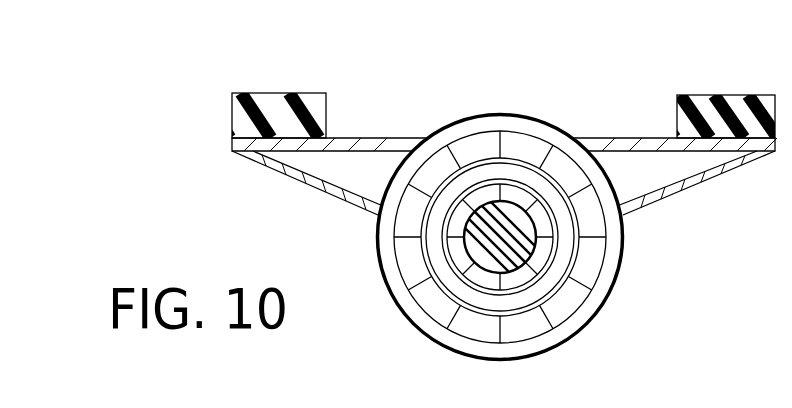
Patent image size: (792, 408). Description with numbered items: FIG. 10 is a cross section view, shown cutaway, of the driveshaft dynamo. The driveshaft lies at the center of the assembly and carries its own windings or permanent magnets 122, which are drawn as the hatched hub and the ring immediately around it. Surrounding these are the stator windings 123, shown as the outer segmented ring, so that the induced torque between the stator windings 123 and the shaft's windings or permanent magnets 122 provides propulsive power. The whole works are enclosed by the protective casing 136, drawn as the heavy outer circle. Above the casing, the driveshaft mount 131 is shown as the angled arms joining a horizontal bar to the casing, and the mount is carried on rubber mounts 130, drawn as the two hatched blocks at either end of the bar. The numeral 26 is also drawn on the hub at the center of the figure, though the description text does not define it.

The shaft 26 is at (510, 205).
The rubber mounts 130 is at (266, 94).
The driveshaft mount 131 is at (308, 185).
The protective casing 136 is at (621, 262).
The windings or permanent magnets 122 is at (470, 280).
The stator windings 123 is at (560, 310).